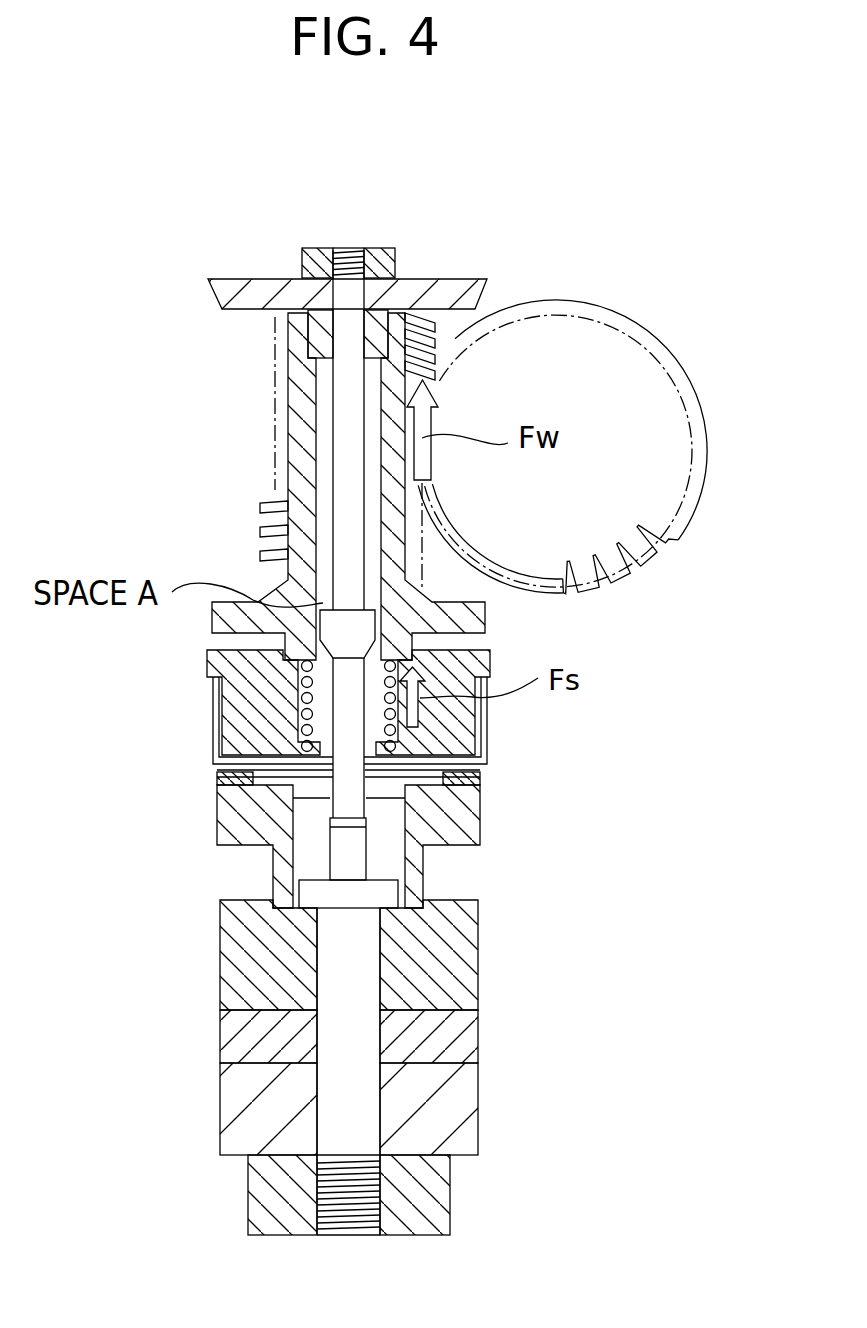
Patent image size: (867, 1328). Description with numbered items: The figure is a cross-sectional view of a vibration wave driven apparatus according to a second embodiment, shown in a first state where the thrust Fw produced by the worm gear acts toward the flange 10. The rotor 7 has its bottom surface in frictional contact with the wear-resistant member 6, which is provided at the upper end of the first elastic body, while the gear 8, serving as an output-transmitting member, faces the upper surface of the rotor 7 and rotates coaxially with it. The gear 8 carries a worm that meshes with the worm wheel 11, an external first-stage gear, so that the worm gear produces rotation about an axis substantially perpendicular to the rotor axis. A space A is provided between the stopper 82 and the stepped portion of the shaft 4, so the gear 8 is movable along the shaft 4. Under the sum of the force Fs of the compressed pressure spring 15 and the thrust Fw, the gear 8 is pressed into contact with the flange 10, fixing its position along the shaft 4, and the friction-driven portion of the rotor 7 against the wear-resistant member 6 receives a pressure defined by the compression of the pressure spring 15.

The shaft 4 is at (343, 1070).
The wear-resistant member 6 is at (253, 775).
The rotor 7 is at (453, 738).
The gear 8 is at (297, 458).
The flange 10 is at (452, 290).
The worm wheel 11 is at (665, 466).
The pressure spring 15 is at (295, 685).
The stopper 82 is at (375, 592).